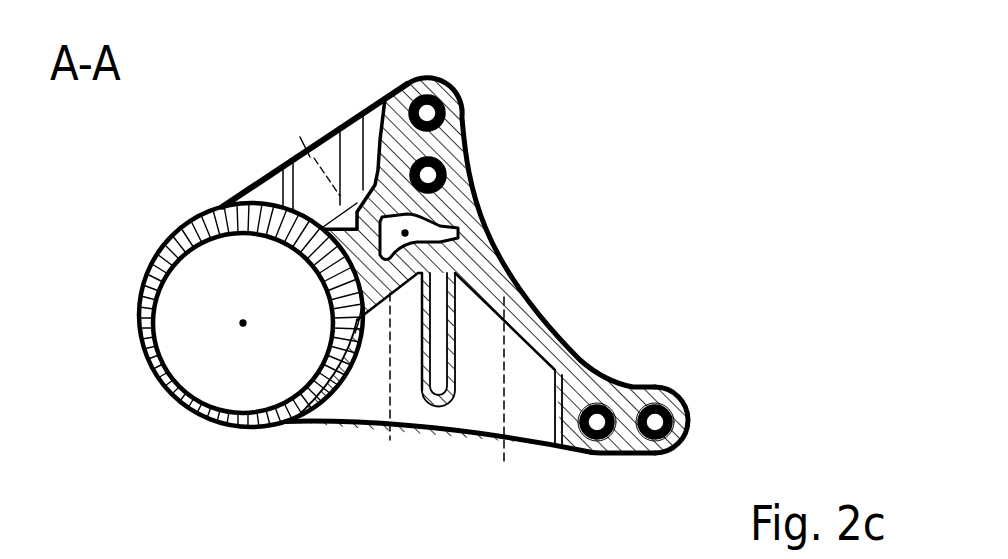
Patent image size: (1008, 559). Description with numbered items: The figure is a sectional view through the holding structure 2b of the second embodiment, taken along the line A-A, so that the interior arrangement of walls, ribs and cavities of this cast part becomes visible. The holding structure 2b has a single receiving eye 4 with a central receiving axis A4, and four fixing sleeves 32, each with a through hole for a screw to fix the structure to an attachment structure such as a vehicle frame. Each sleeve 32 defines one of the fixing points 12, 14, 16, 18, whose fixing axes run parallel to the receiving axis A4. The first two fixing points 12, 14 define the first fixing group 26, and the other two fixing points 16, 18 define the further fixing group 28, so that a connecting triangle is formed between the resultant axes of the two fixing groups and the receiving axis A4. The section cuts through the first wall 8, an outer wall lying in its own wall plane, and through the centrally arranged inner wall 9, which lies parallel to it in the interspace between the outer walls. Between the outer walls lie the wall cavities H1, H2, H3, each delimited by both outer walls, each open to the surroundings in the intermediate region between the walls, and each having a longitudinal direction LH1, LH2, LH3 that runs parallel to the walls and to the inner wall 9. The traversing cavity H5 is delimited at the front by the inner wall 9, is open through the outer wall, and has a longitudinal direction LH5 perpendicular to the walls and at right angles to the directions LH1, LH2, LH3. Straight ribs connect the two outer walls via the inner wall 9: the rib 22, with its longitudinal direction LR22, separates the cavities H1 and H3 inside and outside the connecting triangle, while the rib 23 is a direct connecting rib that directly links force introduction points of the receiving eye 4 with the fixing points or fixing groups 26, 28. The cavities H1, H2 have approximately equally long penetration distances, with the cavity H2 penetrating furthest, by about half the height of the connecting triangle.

The holding structure 2b is at (216, 201).
The receiving eye 4 is at (170, 333).
The first wall 8 is at (343, 403).
The inner wall 9 is at (385, 372).
The fixing point 12 is at (445, 92).
The fixing point 14 is at (446, 176).
The fixing point 16 is at (590, 402).
The fixing point 18 is at (650, 402).
The rib 22 is at (518, 387).
The rib 23 is at (522, 306).
The first fixing group 26 is at (472, 122).
The further fixing group 28 is at (692, 405).
The fixing sleeve 32 is at (414, 97).
The receiving axis A4 is at (243, 324).
The cavity H1 is at (413, 365).
The cavity H2 is at (457, 323).
The cavity H3 is at (382, 135).
The cavity H5 is at (447, 240).
The longitudinal direction LH1 is at (388, 400).
The longitudinal direction LH2 is at (504, 432).
The longitudinal direction LH3 is at (307, 150).
The longitudinal direction LH5 is at (405, 233).
The longitudinal direction LR22 is at (437, 375).